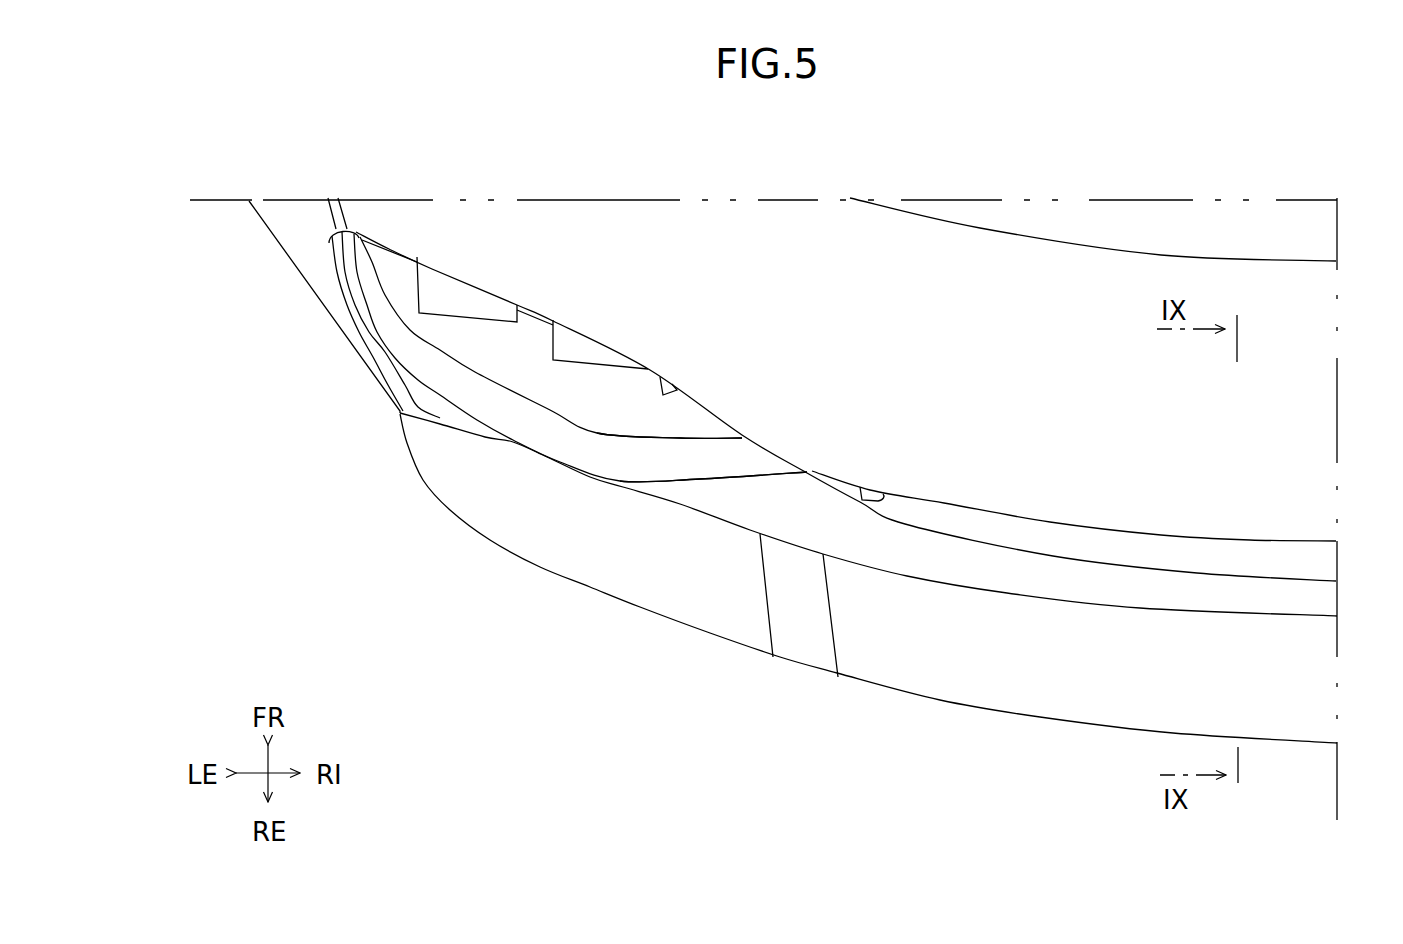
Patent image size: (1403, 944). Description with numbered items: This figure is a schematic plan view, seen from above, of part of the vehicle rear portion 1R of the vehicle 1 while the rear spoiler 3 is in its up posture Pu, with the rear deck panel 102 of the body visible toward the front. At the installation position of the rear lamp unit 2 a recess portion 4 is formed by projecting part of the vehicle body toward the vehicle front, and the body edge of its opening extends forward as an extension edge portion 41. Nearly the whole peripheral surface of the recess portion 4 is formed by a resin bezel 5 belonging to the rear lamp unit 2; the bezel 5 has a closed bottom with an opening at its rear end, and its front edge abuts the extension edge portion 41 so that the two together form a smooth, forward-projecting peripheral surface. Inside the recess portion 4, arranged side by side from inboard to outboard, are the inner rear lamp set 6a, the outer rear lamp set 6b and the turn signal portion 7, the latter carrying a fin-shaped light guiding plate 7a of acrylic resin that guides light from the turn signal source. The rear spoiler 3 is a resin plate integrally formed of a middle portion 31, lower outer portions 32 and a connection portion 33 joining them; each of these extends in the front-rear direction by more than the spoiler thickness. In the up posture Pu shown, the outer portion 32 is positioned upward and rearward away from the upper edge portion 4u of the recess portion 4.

The vehicle 1 is at (315, 242).
The vehicle rear portion 1R is at (468, 638).
The rear lamp unit 2 is at (512, 431).
The rear spoiler 3 is at (1032, 723).
The middle portion 31 is at (935, 670).
The outer portion 32 is at (718, 622).
The connection portion 33 is at (805, 643).
The recess portion 4 is at (398, 417).
The upper edge portion 4u is at (675, 388).
The extension edge portion 41 is at (735, 453).
The bezel 5 is at (693, 418).
The inner rear lamp set 6a is at (599, 371).
The outer rear lamp set 6b is at (481, 327).
The turn signal portion 7 is at (381, 286).
The fin-shaped light guiding plate 7a is at (377, 262).
The rear deck panel 102 is at (1316, 438).
The up posture Pu is at (959, 718).